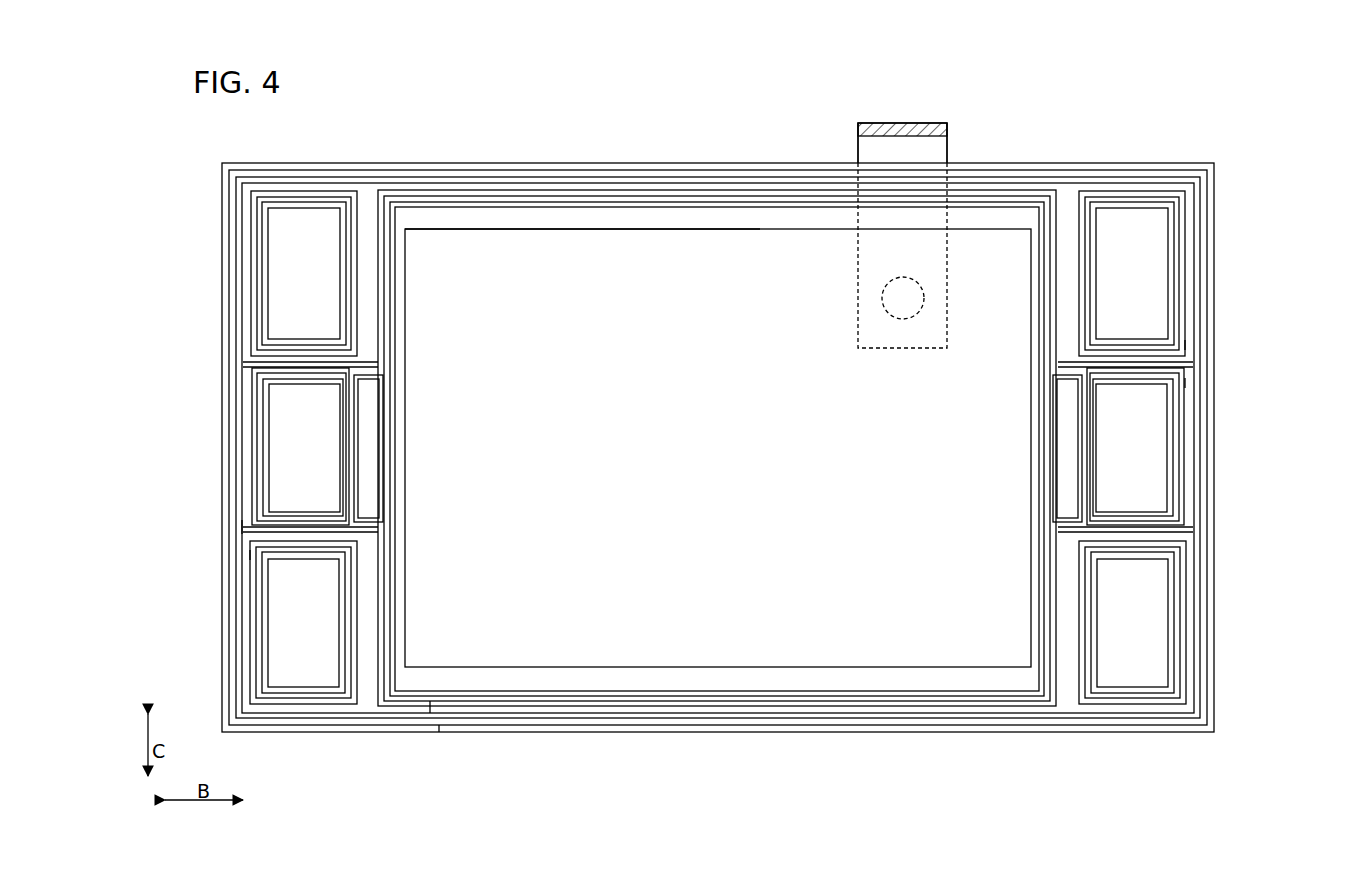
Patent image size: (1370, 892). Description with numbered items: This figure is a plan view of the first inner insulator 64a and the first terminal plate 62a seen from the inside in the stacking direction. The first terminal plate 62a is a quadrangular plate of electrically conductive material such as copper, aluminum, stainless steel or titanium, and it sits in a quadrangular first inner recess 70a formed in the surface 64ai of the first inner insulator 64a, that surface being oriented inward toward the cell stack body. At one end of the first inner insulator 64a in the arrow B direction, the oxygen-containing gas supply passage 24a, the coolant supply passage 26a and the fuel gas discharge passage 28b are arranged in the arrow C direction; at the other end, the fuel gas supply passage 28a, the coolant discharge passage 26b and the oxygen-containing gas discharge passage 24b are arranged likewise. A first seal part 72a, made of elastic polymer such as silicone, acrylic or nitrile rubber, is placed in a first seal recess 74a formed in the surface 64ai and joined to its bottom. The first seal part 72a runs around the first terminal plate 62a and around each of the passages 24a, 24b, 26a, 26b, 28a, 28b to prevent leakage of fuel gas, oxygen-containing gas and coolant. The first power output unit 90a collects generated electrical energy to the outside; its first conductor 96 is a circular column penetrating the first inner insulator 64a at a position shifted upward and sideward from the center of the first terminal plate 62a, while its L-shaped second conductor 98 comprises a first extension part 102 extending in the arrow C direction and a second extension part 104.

The oxygen-containing gas supply passage 24a is at (283, 245).
The oxygen-containing gas discharge passage 24b is at (1152, 615).
The coolant supply passage 26a is at (290, 431).
The coolant discharge passage 26b is at (1150, 462).
The fuel gas supply passage 28a is at (1155, 247).
The fuel gas discharge passage 28b is at (283, 659).
The first terminal plate 62a is at (700, 245).
The first inner insulator 64a is at (1160, 161).
The surface 64ai is at (586, 222).
The first inner recess 70a is at (698, 667).
The first seal part 72a is at (311, 547).
The first seal recess 74a is at (252, 556).
The first power output unit 90a is at (950, 122).
The first conductor 96 is at (899, 323).
The second conductor 98 is at (858, 123).
The first extension part 102 is at (937, 148).
The second extension part 104 is at (899, 129).